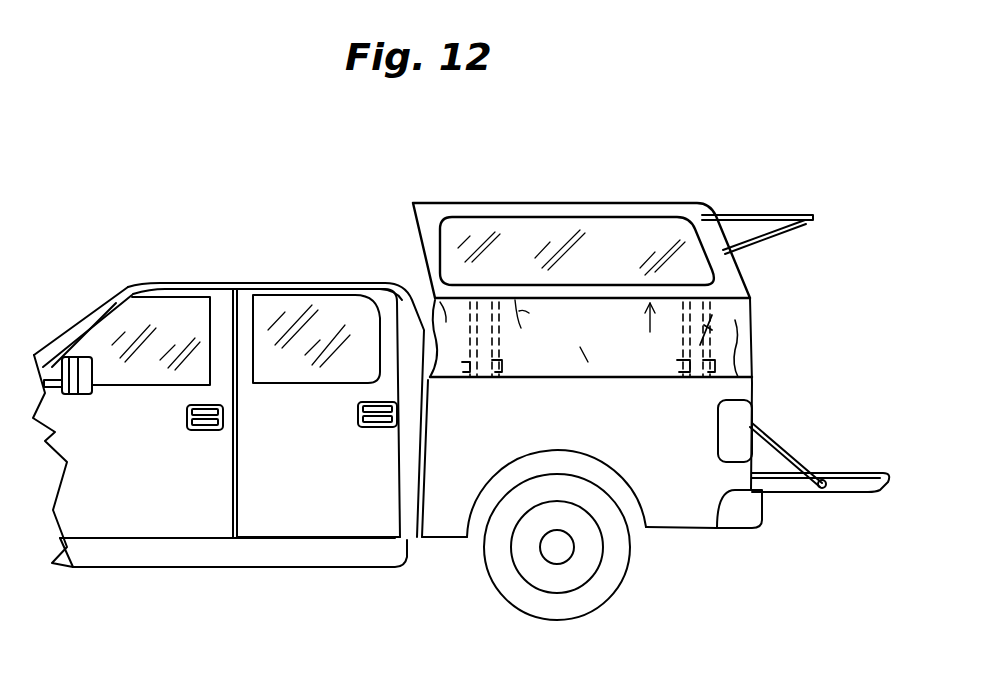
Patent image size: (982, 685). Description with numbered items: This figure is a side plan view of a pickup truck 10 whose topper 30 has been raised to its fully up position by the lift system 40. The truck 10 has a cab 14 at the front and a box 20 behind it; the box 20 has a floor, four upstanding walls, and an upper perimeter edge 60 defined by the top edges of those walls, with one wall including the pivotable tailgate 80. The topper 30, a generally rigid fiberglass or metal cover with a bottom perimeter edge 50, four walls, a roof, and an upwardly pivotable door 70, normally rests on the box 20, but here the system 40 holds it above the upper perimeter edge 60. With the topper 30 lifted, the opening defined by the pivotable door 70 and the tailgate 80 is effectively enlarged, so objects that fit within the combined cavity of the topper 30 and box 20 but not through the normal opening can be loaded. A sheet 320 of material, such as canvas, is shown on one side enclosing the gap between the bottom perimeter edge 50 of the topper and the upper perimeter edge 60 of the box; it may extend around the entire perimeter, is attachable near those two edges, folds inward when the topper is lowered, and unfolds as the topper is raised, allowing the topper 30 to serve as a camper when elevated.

The pickup truck 10 is at (140, 252).
The cab 14 is at (290, 284).
The box 20 is at (673, 515).
The topper 30 is at (675, 207).
The system 40 is at (723, 350).
The bottom perimeter edge 50 is at (748, 310).
The upper perimeter edge 60 is at (752, 392).
The upwardly pivotable door 70 is at (805, 217).
The tailgate 80 is at (888, 477).
The sheet 320 is at (735, 320).